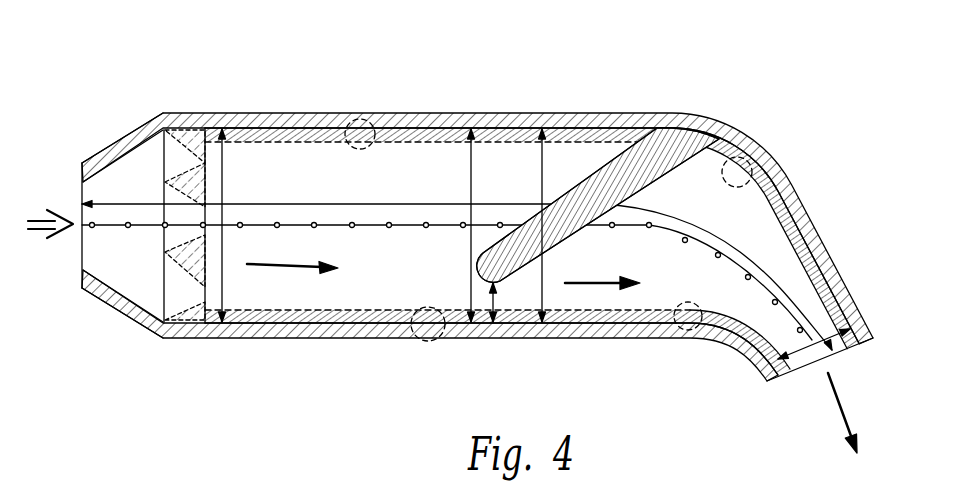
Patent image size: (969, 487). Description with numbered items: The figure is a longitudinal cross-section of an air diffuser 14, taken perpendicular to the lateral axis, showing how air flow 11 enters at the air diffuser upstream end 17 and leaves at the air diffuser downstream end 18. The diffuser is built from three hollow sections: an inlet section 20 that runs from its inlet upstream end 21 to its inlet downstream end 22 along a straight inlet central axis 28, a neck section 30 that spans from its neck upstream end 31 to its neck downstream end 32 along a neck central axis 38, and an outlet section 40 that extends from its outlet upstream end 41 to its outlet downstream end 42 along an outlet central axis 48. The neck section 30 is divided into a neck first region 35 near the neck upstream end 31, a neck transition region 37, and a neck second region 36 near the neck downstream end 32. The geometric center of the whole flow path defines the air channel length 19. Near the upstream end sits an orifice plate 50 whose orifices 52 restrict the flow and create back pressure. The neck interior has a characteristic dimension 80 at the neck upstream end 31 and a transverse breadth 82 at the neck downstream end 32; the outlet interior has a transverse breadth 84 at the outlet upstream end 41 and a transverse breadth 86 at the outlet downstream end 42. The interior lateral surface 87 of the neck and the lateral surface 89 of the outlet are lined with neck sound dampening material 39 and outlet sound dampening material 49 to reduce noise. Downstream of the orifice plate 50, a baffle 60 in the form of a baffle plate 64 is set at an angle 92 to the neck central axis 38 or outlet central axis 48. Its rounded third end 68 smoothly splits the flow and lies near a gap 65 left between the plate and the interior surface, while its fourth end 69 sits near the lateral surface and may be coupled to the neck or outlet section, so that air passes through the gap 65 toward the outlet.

The air diffuser 14 is at (150, 77).
The air diffuser upstream end 17 is at (97, 152).
The air flow 11 is at (34, 212).
The orifice plate 50 is at (160, 162).
The orifices 52 is at (165, 190).
The neck first region 35 is at (277, 112).
The neck transition region 37 is at (313, 112).
The lateral surface 87 is at (362, 117).
The neck second region 36 is at (467, 110).
The outlet upstream end 41 is at (540, 112).
The baffle 60 is at (594, 166).
The baffle plate 64 is at (622, 152).
The fourth end 69 is at (700, 140).
The lateral surface 89 is at (772, 163).
The outlet section 40 is at (827, 235).
The outlet downstream end 42 is at (870, 325).
The transverse breadth 86 is at (806, 370).
The air diffuser downstream end 18 is at (748, 368).
The outlet central axis 48 is at (718, 255).
The gap 65 is at (497, 305).
The neck downstream end 32 is at (503, 338).
The neck central axis 38 is at (367, 227).
The neck section 30 is at (302, 341).
The neck upstream end 31 is at (230, 340).
The inlet downstream end 22 is at (163, 340).
The inlet section 20 is at (112, 311).
The inlet central axis 28 is at (117, 225).
The inlet upstream end 21 is at (83, 290).
The air channel length 19 is at (317, 204).
The neck sound dampening material 39 is at (433, 143).
The angle 92 is at (497, 230).
The characteristic dimension 80 is at (222, 260).
The third end 68 is at (482, 255).
The transverse breadth 82 is at (485, 283).
The transverse breadth 84 is at (543, 277).
The outlet sound dampening material 49 is at (767, 212).